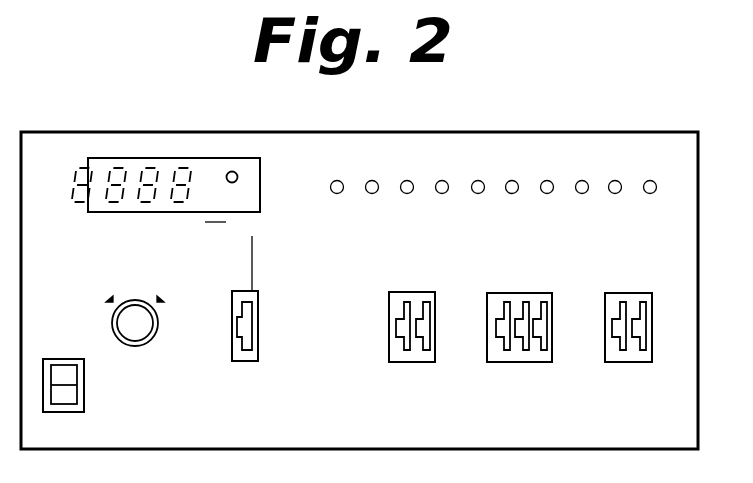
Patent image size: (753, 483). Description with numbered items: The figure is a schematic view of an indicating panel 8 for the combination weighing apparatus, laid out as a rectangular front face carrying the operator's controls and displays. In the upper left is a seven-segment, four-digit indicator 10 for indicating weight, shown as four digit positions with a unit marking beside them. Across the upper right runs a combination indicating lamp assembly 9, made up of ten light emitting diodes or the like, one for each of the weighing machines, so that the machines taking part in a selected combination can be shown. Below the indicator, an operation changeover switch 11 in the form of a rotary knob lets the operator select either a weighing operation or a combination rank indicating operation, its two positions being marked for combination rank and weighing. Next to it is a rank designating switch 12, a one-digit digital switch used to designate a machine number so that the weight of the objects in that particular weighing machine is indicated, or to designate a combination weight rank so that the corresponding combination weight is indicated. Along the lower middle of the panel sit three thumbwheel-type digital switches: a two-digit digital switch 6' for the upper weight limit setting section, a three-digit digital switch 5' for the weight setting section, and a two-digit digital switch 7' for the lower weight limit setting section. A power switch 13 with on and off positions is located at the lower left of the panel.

The indicating panel 8 is at (600, 130).
The combination indicating lamp assembly 9 is at (664, 179).
The 7-segment 4-digit indicator 10 is at (261, 167).
The operation changeover switch 11 is at (146, 343).
The rank designating switch 12 is at (248, 362).
The power switch 13 is at (85, 394).
The 3-digit digital switch 5' is at (519, 334).
The 2-digit digital switch 6' is at (412, 330).
The 2-digit digital switch 7' is at (629, 336).